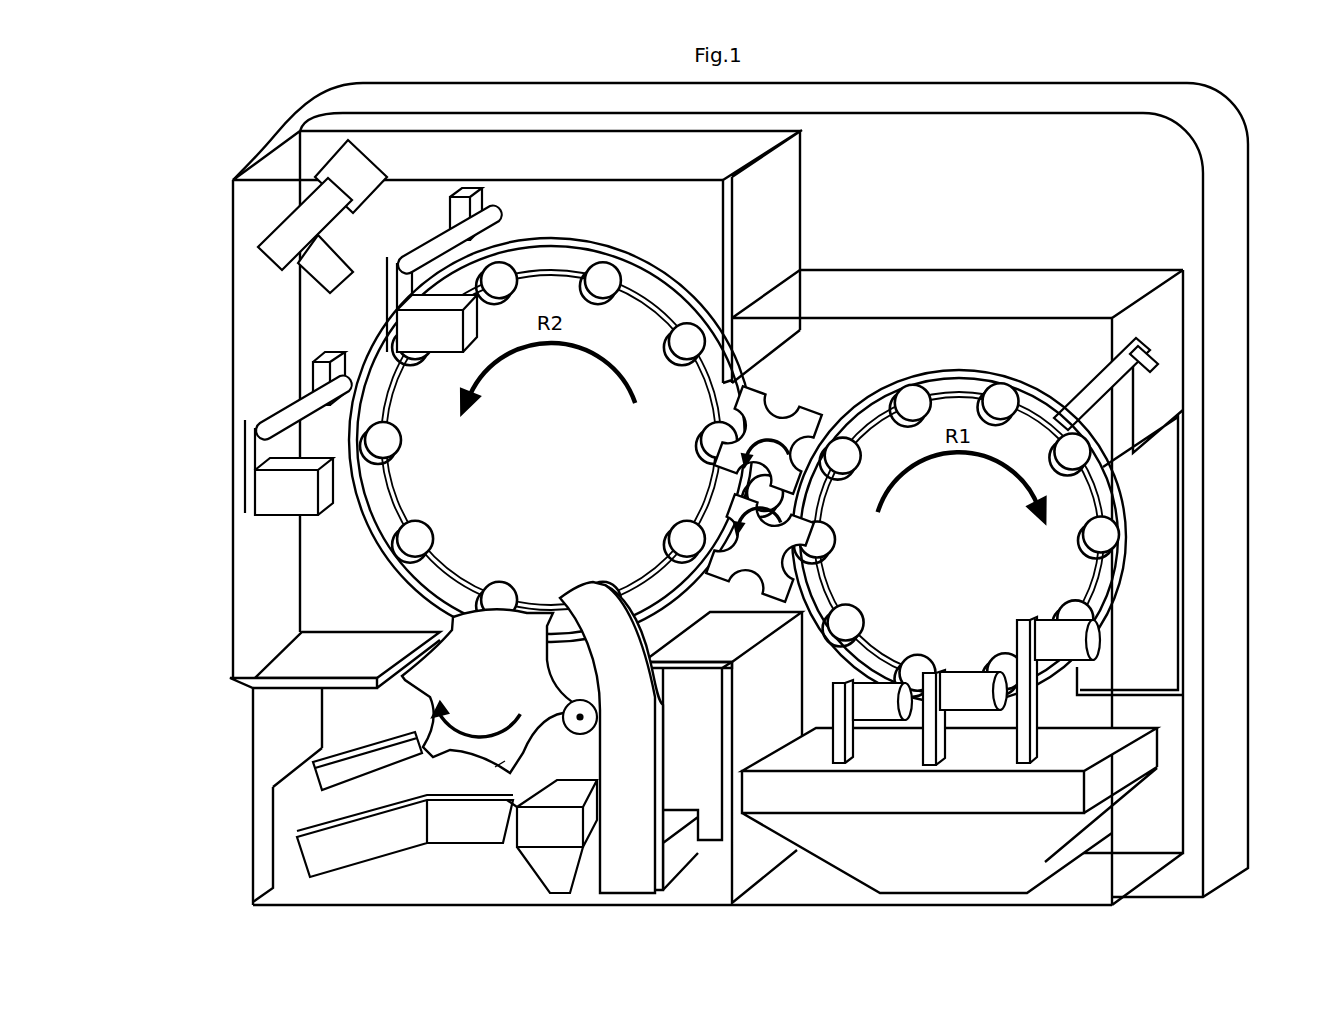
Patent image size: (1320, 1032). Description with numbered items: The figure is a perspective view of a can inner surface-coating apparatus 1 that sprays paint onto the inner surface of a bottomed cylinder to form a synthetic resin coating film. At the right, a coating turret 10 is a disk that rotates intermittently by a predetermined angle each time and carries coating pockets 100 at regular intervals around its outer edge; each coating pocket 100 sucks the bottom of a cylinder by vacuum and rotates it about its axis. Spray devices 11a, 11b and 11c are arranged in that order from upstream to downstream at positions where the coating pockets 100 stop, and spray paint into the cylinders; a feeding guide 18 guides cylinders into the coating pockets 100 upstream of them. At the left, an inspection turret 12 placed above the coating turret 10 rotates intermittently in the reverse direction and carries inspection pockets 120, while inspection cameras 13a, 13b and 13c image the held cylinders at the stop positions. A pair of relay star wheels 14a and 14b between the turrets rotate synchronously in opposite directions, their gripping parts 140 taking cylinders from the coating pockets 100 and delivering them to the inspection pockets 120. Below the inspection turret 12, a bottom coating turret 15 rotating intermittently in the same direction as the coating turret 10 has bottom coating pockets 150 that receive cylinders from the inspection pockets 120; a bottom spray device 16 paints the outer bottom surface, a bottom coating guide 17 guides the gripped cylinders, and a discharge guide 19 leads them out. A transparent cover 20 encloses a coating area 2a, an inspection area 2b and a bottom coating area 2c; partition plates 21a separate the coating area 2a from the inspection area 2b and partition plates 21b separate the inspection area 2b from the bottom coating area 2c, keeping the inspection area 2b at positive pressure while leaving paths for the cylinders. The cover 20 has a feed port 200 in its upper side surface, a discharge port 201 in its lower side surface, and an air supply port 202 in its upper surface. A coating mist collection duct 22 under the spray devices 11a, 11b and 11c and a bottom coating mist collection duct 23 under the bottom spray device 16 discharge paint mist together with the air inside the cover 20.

The can inner surface-coating apparatus 1 is at (1236, 136).
The coating area 2a is at (1053, 352).
The inspection area 2b is at (543, 226).
The bottom coating area 2c is at (352, 716).
The coating turret 10 is at (961, 376).
The spray device 11a is at (1025, 640).
The spray device 11b is at (952, 672).
The spray device 11c is at (872, 690).
The inspection turret 12 is at (651, 291).
The inspection camera 13a is at (439, 346).
The inspection camera 13b is at (280, 233).
The inspection camera 13c is at (285, 500).
The relay star wheel 14a is at (762, 572).
The relay star wheel 14b is at (752, 432).
The bottom coating turret 15 is at (490, 665).
The bottom spray device 16 is at (572, 730).
The bottom coating guide 17 is at (658, 760).
The feeding guide 18 is at (1142, 400).
The discharge guide 19 is at (338, 806).
The cover 20 is at (860, 292).
The partition plate 21a is at (722, 212).
The partition plate 21b is at (351, 652).
The coating mist collection duct 22 is at (1140, 752).
The bottom coating mist collection duct 23 is at (545, 826).
The coating pocket 100 is at (922, 397).
The inspection pocket 120 is at (603, 272).
The gripping part 140 is at (720, 441).
The bottom coating pocket 150 is at (500, 764).
The feed port 200 is at (1170, 360).
The discharge port 201 is at (290, 798).
The air supply port 202 is at (416, 142).